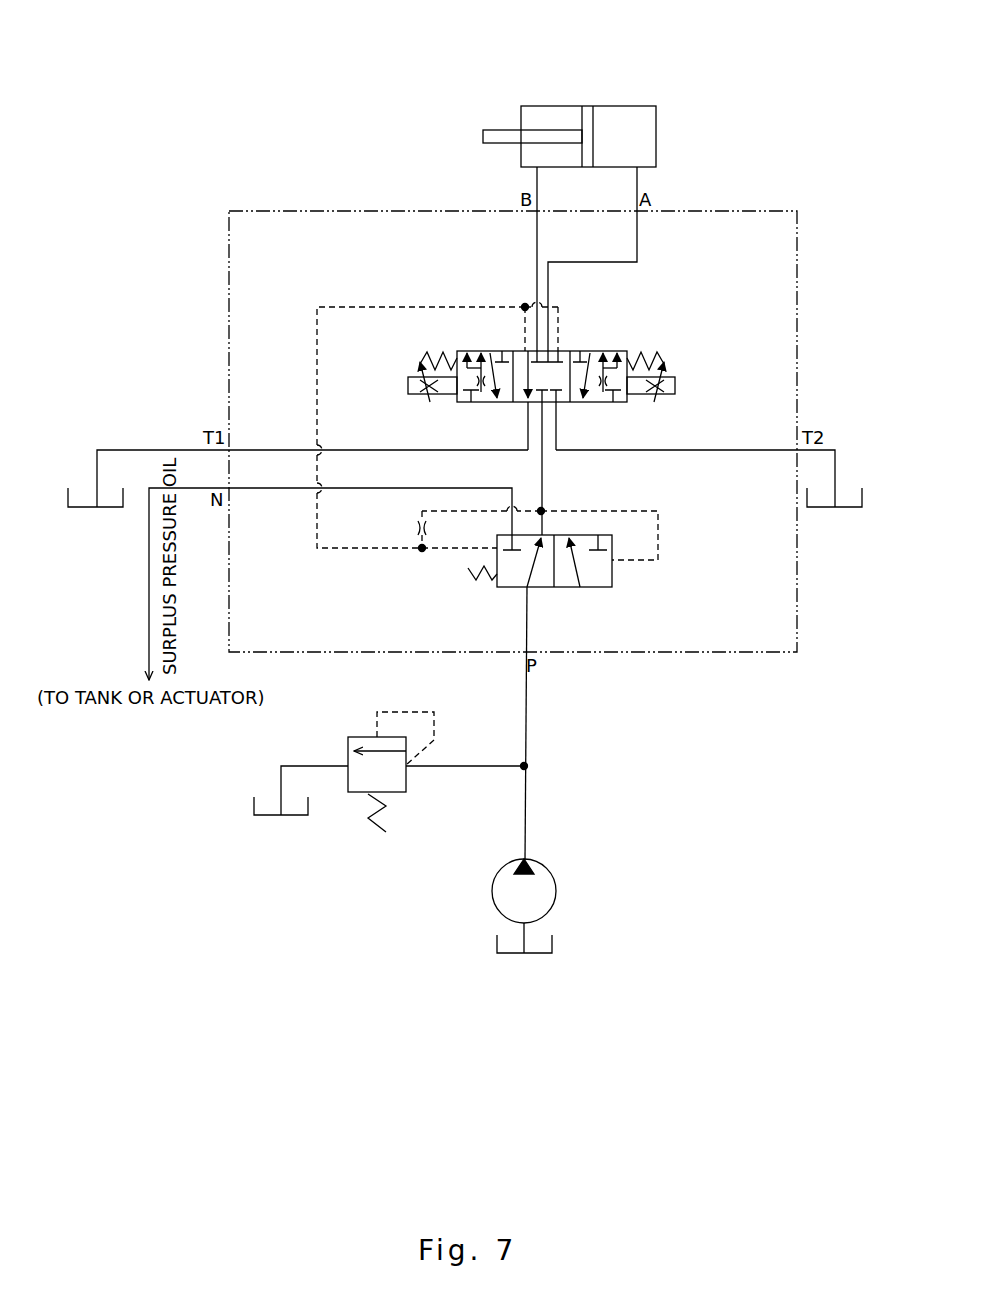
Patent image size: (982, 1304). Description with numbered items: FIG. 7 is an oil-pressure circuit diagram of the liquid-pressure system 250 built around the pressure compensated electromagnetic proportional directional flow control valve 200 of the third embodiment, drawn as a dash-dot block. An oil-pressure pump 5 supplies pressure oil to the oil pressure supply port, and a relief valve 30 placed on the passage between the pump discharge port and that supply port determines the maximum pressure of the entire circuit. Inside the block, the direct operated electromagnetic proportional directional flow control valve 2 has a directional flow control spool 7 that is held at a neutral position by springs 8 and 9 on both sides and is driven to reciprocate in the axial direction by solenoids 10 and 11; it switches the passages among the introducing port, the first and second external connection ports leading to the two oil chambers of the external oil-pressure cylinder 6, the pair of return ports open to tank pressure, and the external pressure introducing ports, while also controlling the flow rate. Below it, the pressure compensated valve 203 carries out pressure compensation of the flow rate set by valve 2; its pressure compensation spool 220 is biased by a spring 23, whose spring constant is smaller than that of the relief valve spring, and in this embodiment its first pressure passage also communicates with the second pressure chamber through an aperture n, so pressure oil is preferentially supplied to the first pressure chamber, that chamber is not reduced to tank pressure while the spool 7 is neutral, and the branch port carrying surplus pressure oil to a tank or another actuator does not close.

The hydraulic circuit 250 is at (228, 116).
The pressure compensated electromagnetic proportional directional flow control valve 200 is at (227, 250).
The oil-pressure cylinder 6 is at (617, 106).
The electromagnetic proportional directional flow control valve 2 is at (564, 352).
The directional flow control spool 7 is at (466, 402).
The spring 9 is at (428, 360).
The spring 8 is at (655, 362).
The solenoid 11 is at (408, 386).
The solenoid 10 is at (676, 386).
The switching valve 203 is at (617, 588).
The pressure compensation spool 220 is at (567, 588).
The spring 23 is at (490, 583).
The aperture n is at (414, 528).
The relief valve 30 is at (358, 796).
The oil-pressure pump 5 is at (492, 893).